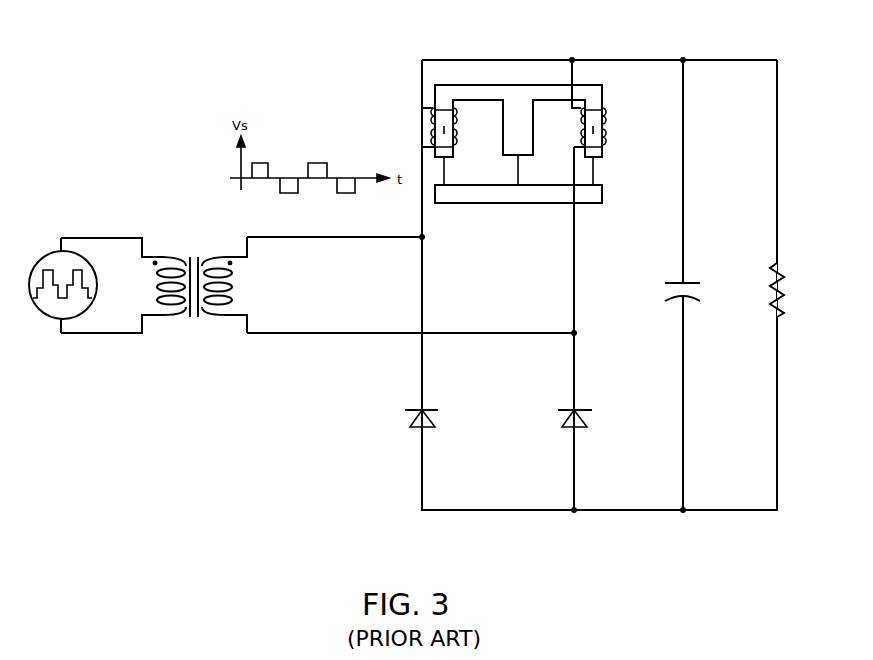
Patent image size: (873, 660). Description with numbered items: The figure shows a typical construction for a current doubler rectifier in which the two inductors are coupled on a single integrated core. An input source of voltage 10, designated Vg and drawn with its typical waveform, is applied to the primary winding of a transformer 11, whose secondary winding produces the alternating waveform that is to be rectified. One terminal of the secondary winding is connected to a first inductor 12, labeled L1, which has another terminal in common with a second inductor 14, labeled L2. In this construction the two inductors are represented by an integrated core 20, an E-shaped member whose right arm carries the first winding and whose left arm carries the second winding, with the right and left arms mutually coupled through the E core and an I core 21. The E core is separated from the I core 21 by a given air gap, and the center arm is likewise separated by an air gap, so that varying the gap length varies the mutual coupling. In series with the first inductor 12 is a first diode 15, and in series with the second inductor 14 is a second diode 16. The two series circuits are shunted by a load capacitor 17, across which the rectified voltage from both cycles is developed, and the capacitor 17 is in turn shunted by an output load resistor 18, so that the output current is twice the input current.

The input source of voltage 10 is at (50, 318).
The transformer 11 is at (207, 320).
The first inductor 12 is at (427, 122).
The second inductor 14 is at (610, 117).
The integrated core 20 is at (512, 80).
The I core 21 is at (520, 203).
The first diode 15 is at (407, 410).
The second diode 16 is at (590, 415).
The load capacitor 17 is at (665, 292).
The output load resistor 18 is at (783, 308).